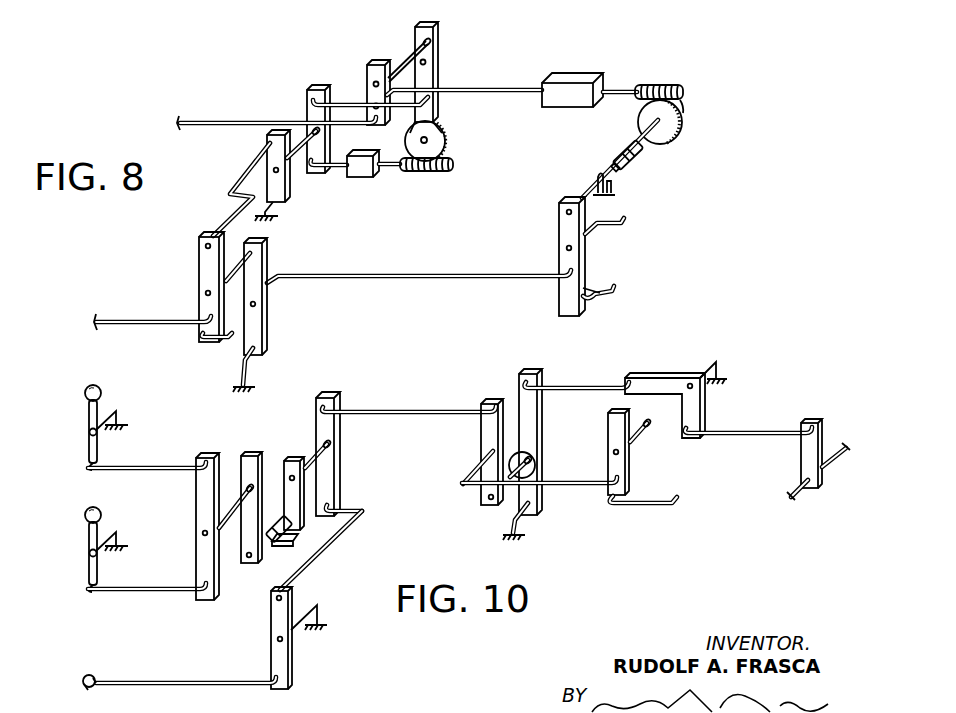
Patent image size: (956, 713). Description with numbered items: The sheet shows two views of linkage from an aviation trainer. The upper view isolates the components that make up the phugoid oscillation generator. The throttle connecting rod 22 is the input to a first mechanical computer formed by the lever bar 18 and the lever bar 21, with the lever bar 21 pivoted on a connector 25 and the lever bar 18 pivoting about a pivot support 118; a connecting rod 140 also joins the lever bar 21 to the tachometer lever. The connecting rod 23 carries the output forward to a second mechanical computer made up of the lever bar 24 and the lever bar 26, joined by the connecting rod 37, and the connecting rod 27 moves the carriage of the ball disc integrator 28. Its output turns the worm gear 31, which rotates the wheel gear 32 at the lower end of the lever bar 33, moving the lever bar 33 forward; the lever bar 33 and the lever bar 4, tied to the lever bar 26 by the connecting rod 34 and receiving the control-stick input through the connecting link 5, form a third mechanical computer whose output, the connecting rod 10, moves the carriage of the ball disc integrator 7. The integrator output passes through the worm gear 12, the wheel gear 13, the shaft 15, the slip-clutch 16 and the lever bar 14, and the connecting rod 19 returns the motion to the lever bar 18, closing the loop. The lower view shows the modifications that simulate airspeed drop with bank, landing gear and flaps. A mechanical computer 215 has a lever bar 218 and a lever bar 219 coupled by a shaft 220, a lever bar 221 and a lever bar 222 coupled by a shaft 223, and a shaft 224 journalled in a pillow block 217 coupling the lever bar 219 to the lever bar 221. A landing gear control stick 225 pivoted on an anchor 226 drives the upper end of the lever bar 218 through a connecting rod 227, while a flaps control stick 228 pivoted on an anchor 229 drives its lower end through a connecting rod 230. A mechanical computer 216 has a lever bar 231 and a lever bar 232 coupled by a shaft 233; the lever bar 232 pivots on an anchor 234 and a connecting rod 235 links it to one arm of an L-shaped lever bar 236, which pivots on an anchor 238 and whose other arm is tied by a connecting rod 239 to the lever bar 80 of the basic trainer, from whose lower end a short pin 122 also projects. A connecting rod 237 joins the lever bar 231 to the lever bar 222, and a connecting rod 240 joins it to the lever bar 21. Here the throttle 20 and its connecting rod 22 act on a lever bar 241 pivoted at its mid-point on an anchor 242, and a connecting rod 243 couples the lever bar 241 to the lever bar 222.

In FIG. 8, the lever bar 4 is at (380, 62).
In FIG. 8, the connecting link 5 is at (230, 118).
In FIG. 8, the ball disc integrator 7 is at (584, 72).
In FIG. 8, the connecting rod 10 is at (494, 82).
In FIG. 8, the worm gear 12 is at (650, 84).
In FIG. 8, the wheel gear 13 is at (685, 122).
In FIG. 8, the lever bar 14 is at (586, 258).
In FIG. 8, the shaft 15 is at (640, 148).
In FIG. 8, the slip-clutch 16 is at (622, 168).
In FIG. 8, the lever bar 18 is at (267, 322).
In FIG. 8, the connecting rod 19 is at (452, 272).
In FIG. 8, the lever bar 21 is at (197, 268).
In FIG. 10, the lever bar 21 is at (606, 446).
In FIG. 8, the connecting rod 22 is at (148, 314).
In FIG. 10, the connecting rod 22 is at (187, 672).
In FIG. 8, the connecting rod 23 is at (230, 212).
In FIG. 8, the lever bar 24 is at (264, 146).
In FIG. 8, the lever bar 26 is at (314, 172).
In FIG. 8, the connecting rod 27 is at (340, 157).
In FIG. 8, the ball disc integrator 28 is at (362, 178).
In FIG. 8, the worm gear 31 is at (424, 172).
In FIG. 8, the wheel gear 32 is at (448, 132).
In FIG. 8, the lever bar 33 is at (438, 46).
In FIG. 8, the connecting rod 34 is at (356, 88).
In FIG. 8, the connecting rod 37 is at (296, 160).
In FIG. 8, the pivot support 118 is at (240, 354).
In FIG. 10, the throttle 20 is at (86, 670).
In FIG. 10, the connector 25 is at (634, 446).
In FIG. 10, the lever bar 80 is at (810, 420).
In FIG. 10, the pin rod 122 is at (796, 500).
In FIG. 10, the connecting rod 140 is at (640, 508).
In FIG. 10, the mechanical computer 215 is at (226, 450).
In FIG. 10, the mechanical computer 216 is at (508, 386).
In FIG. 10, the pillow block 217 is at (284, 548).
In FIG. 10, the lever bar 218 is at (194, 514).
In FIG. 10, the lever bar 219 is at (244, 452).
In FIG. 10, the shaft 220 is at (222, 530).
In FIG. 10, the lever bar 221 is at (288, 442).
In FIG. 10, the lever bar 222 is at (322, 392).
In FIG. 10, the shaft 223 is at (316, 458).
In FIG. 10, the shaft 224 is at (340, 516).
In FIG. 10, the landing gear control stick 225 is at (88, 408).
In FIG. 10, the anchor 226 is at (104, 436).
In FIG. 10, the connecting rod 227 is at (170, 474).
In FIG. 10, the flaps control stick 228 is at (88, 530).
In FIG. 10, the anchor 229 is at (104, 557).
In FIG. 10, the connecting rod 230 is at (168, 594).
In FIG. 10, the lever bar 231 is at (480, 440).
In FIG. 10, the lever bar 232 is at (530, 410).
In FIG. 10, the shaft 233 is at (534, 468).
In FIG. 10, the anchor 234 is at (522, 528).
In FIG. 10, the connecting rod 235 is at (568, 374).
In FIG. 10, the L-shaped lever bar 236 is at (626, 374).
In FIG. 10, the connecting rod 237 is at (390, 408).
In FIG. 10, the anchor 238 is at (712, 362).
In FIG. 10, the connecting rod 239 is at (728, 432).
In FIG. 10, the connecting rod 240 is at (560, 490).
In FIG. 10, the lever bar 241 is at (290, 666).
In FIG. 10, the anchor 242 is at (310, 598).
In FIG. 10, the connecting rod 243 is at (328, 552).